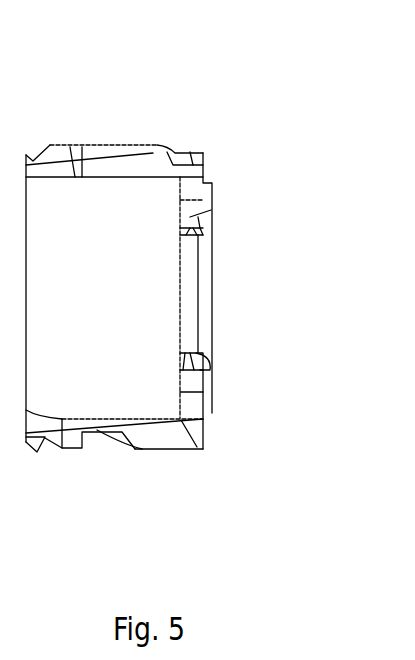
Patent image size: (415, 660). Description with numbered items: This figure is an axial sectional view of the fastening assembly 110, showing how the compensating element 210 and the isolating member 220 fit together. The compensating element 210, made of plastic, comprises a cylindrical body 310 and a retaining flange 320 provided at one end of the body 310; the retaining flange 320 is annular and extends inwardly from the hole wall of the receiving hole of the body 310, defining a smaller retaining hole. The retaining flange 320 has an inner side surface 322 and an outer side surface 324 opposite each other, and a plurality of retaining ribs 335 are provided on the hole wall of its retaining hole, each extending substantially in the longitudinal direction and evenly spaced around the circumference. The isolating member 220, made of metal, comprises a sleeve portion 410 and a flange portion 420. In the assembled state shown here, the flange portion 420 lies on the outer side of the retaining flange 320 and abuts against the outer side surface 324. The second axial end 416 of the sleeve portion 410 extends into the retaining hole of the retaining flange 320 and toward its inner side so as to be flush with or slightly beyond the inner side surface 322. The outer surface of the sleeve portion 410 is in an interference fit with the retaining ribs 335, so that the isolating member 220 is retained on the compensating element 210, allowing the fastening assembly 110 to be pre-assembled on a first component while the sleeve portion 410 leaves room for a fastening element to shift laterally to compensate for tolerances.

The fastening assembly 110 is at (322, 147).
The compensating element 210 is at (247, 69).
The cylindrical body 310 is at (153, 145).
The retaining flange 320 is at (212, 208).
The retaining rib 335 is at (197, 235).
The isolating member 220 is at (283, 292).
The sleeve portion 410 is at (205, 330).
The flange portion 420 is at (213, 411).
The outer side surface 324 is at (213, 416).
The second axial end 416 is at (180, 357).
The inner side surface 322 is at (180, 392).